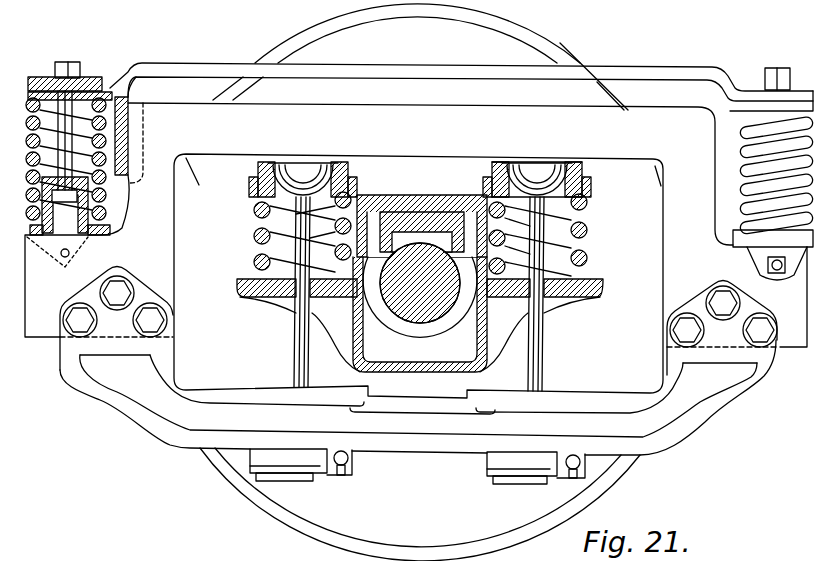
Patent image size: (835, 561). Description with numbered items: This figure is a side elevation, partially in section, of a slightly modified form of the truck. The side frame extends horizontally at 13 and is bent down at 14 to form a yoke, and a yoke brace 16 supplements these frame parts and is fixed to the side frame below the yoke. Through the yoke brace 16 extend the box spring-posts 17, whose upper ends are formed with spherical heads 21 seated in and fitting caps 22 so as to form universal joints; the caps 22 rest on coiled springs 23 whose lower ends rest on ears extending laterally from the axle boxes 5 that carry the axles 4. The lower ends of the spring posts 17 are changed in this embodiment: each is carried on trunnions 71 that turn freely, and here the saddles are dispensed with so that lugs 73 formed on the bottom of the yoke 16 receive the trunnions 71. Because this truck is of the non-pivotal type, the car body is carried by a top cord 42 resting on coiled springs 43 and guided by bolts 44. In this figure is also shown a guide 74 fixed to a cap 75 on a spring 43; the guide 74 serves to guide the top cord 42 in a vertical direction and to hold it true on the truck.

The axle 4 is at (443, 313).
The axle box 5 is at (420, 283).
The horizontal frame portion 13 is at (419, 261).
The bent-down frame portion 14 is at (143, 145).
The yoke brace 16 is at (182, 420).
The box spring-post 17 is at (298, 343).
The spherical head 21 is at (311, 165).
The cap 22 is at (587, 188).
The coiled spring 23 is at (253, 240).
The top cord 42 is at (228, 70).
The coiled spring 43 is at (49, 109).
The bolt 44 is at (70, 52).
The trunnion 71 is at (340, 474).
The lug 73 is at (486, 467).
The guide 74 is at (133, 70).
The cap 75 is at (97, 77).